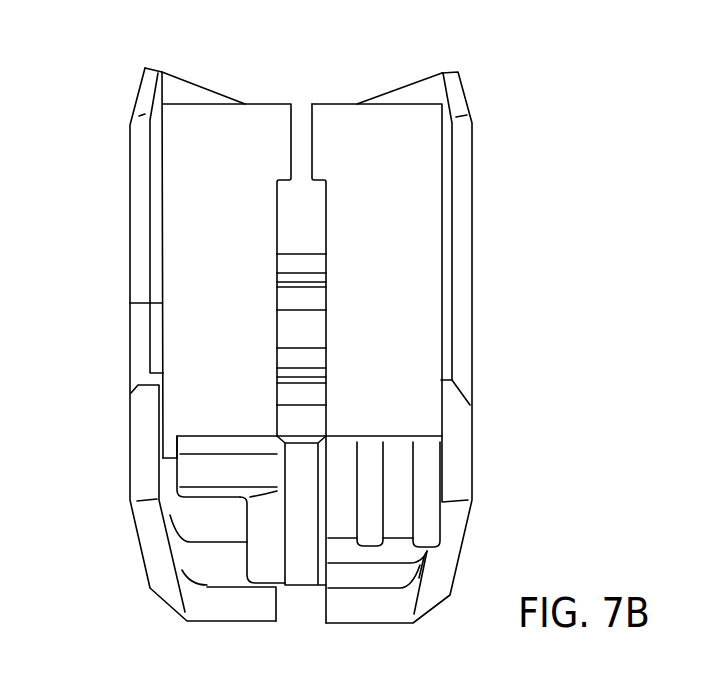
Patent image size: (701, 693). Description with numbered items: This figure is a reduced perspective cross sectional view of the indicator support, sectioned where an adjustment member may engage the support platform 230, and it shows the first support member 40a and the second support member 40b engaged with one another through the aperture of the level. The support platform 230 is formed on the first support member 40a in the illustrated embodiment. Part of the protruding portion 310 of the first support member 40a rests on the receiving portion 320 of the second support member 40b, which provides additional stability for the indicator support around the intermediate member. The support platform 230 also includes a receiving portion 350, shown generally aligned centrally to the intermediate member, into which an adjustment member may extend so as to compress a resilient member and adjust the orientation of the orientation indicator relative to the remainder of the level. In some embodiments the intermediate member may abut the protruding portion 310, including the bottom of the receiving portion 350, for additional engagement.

The first support member 40a is at (493, 76).
The second support member 40b is at (108, 82).
The support platform 230 is at (252, 425).
The protruding portion 310 is at (260, 574).
The receiving portion 320 is at (264, 596).
The receiving portion 350 is at (307, 455).